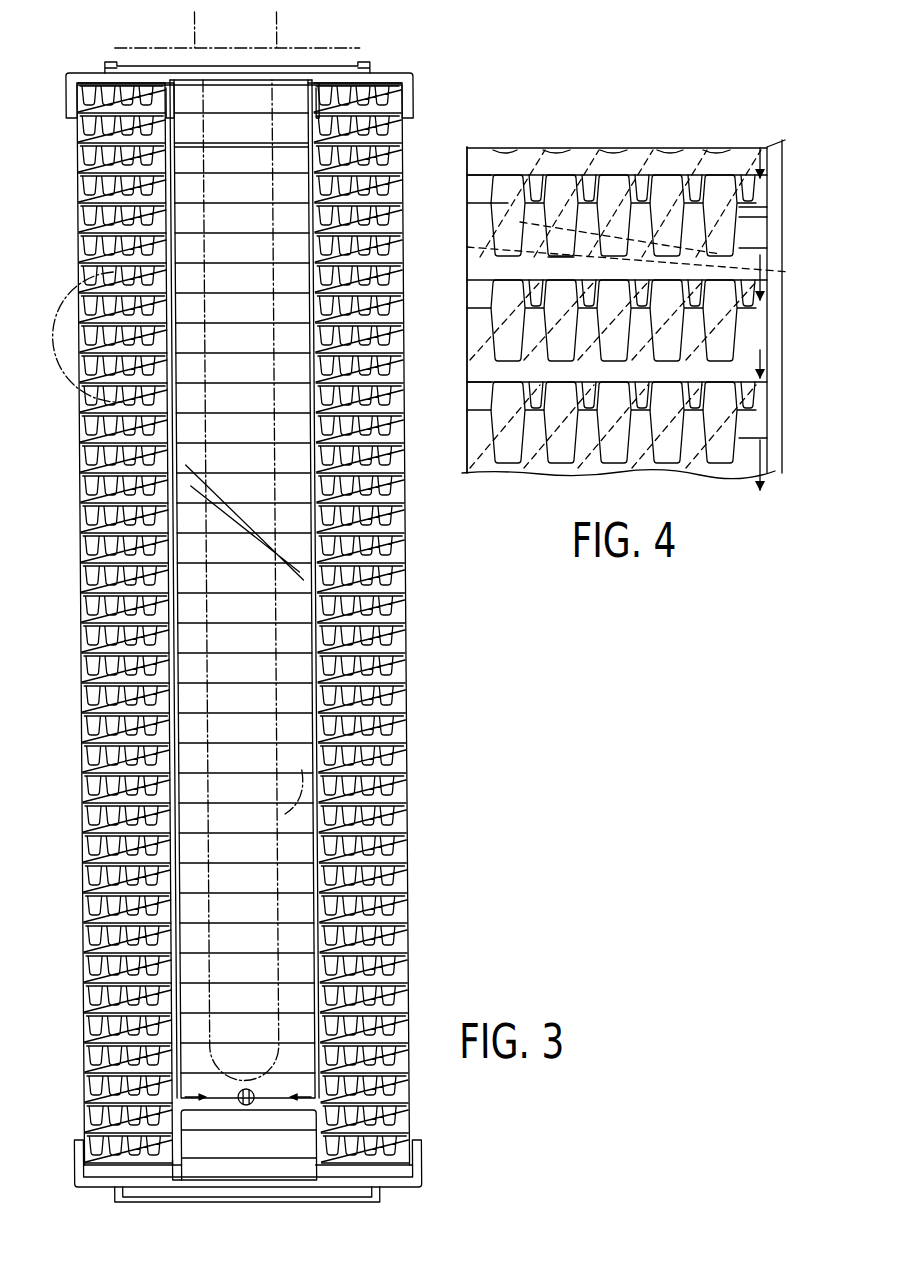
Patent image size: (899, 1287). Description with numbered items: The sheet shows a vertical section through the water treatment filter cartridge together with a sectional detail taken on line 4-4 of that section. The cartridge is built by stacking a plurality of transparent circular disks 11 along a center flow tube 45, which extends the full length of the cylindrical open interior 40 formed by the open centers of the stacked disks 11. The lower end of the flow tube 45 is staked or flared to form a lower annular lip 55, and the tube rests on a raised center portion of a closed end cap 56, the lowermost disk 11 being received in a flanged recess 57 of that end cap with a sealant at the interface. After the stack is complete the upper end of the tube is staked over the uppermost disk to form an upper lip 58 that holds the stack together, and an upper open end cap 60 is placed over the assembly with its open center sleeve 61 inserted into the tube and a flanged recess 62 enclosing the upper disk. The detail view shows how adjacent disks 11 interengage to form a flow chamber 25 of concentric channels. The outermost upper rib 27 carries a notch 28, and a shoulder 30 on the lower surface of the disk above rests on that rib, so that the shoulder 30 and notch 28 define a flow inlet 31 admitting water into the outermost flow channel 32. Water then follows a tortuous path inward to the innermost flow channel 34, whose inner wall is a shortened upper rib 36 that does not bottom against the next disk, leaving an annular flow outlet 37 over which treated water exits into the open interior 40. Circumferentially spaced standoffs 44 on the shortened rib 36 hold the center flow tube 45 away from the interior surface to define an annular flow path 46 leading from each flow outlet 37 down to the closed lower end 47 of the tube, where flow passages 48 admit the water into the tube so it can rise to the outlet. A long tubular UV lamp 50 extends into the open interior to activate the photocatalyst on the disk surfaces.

In FIG. 3, the circular disk 11 is at (403, 640).
In FIG. 4, the circular disk 11 is at (667, 185).
In FIG. 4, the flow chamber 25 is at (556, 228).
In FIG. 4, the outermost upper rib 27 is at (470, 402).
In FIG. 4, the notch 28 is at (500, 213).
In FIG. 4, the shoulder 30 is at (498, 214).
In FIG. 3, the flow inlet 31 is at (78, 790).
In FIG. 4, the flow inlet 31 is at (465, 192).
In FIG. 4, the outermost flow channel 32 is at (508, 245).
In FIG. 4, the innermost flow channel 34 is at (730, 248).
In FIG. 4, the shortened upper rib 36 is at (735, 195).
In FIG. 4, the annular flow outlet 37 is at (758, 186).
In FIG. 4, the cylindrical open interior 40 is at (735, 405).
In FIG. 4, the standoff 44 is at (767, 390).
In FIG. 3, the center flow tube 45 is at (310, 966).
In FIG. 4, the center flow tube 45 is at (770, 318).
In FIG. 4, the annular flow path 46 is at (765, 445).
In FIG. 3, the closed lower end 47 is at (318, 1117).
In FIG. 3, the flow passage 48 is at (304, 1105).
In FIG. 3, the UV lamp 50 is at (296, 770).
In FIG. 3, the lower annular lip 55 is at (168, 1175).
In FIG. 3, the closed end cap 56 is at (390, 1185).
In FIG. 3, the flanged recess 57 is at (414, 1160).
In FIG. 3, the upper lip 58 is at (303, 85).
In FIG. 3, the upper open end cap 60 is at (90, 72).
In FIG. 3, the open center sleeve 61 is at (174, 108).
In FIG. 3, the flanged recess 62 is at (66, 105).
In FIG. 3, the section line 4- 4 is at (187, 316).